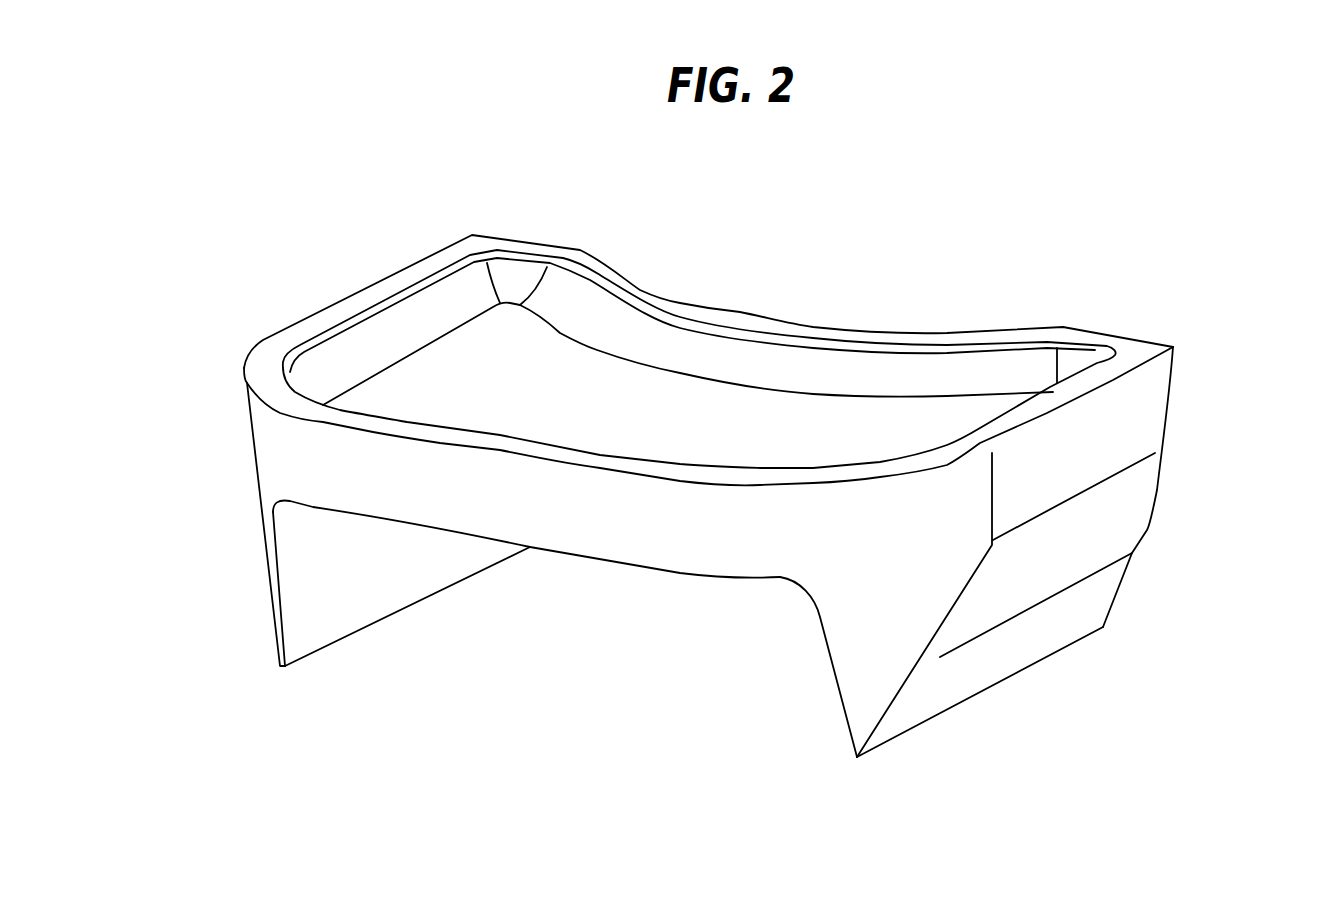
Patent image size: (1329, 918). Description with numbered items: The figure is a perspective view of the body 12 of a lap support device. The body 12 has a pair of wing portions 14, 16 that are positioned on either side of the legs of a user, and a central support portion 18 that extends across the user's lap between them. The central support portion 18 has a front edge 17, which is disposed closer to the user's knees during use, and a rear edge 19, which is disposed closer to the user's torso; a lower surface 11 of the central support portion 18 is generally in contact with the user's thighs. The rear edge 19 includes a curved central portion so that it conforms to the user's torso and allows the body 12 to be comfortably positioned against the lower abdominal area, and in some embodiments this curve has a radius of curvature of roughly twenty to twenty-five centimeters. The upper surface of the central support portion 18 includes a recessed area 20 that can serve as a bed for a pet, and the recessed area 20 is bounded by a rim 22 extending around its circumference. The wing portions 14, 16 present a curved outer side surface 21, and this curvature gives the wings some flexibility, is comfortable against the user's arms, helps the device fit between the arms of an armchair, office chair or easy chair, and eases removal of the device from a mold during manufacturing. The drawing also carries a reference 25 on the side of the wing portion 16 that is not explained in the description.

The lower surface 11 is at (645, 567).
The body 12 is at (1210, 327).
The wing portion 14 is at (297, 570).
The wing portion 16 is at (872, 693).
The front edge 17 is at (470, 433).
The central support portion 18 is at (573, 510).
The rear edge 19 is at (740, 315).
The recessed area 20 is at (832, 423).
The outer side surface 21 is at (257, 457).
The rim 22 is at (600, 320).
The side wall rib 25 is at (1112, 528).